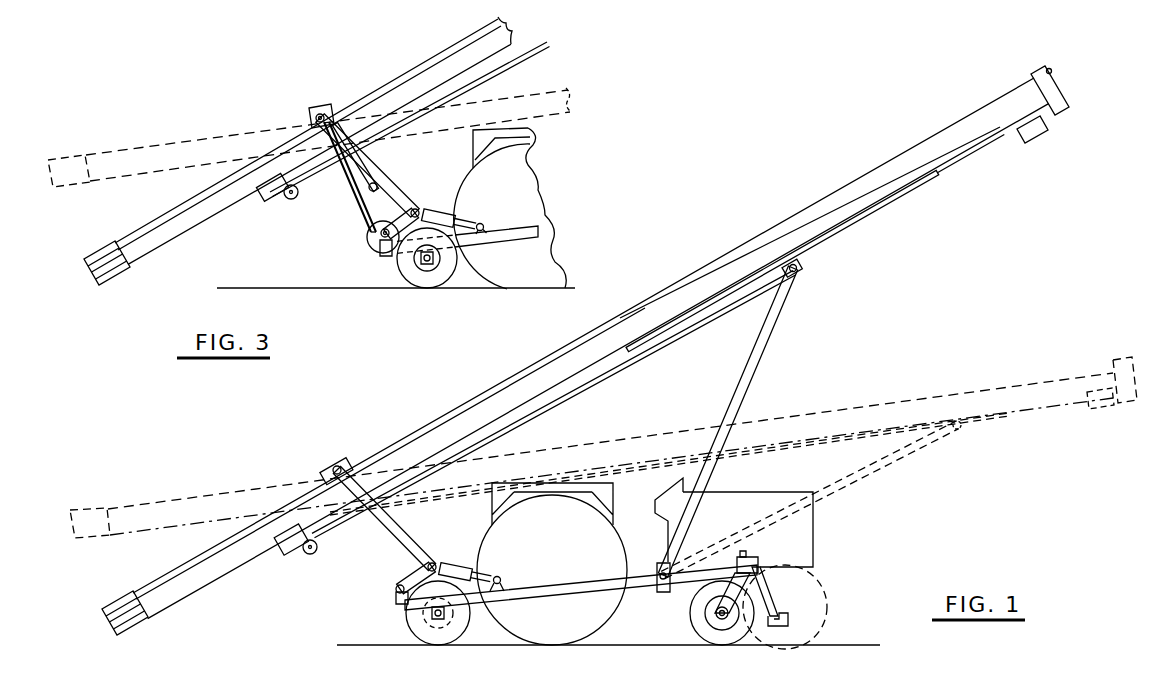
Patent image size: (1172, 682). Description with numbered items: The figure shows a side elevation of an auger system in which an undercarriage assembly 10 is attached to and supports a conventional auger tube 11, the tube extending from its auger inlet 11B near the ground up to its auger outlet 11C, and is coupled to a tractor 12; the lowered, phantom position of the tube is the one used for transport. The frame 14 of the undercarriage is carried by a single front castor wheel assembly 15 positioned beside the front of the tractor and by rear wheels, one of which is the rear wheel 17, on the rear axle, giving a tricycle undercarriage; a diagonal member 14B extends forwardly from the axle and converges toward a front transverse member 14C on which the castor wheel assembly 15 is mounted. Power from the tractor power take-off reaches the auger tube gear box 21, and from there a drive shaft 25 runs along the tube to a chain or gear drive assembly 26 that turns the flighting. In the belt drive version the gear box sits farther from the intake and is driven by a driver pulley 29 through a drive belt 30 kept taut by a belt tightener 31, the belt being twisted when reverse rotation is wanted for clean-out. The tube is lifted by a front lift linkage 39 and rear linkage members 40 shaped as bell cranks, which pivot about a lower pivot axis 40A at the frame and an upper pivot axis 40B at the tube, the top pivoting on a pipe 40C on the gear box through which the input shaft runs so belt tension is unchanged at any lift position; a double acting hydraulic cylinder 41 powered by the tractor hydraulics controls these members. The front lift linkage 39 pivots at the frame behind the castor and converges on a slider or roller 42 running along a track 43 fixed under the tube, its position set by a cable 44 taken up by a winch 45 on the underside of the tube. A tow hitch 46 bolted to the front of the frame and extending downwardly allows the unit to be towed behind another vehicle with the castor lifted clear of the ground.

In FIG. 3, the undercarriage assembly 10 is at (501, 250).
In FIG. 1, the undercarriage assembly 10 is at (592, 605).
In FIG. 3, the auger tube 11 is at (455, 42).
In FIG. 1, the auger tube 11 is at (866, 170).
In FIG. 3, the auger inlet 11B is at (115, 267).
In FIG. 1, the auger inlet 11B is at (140, 620).
In FIG. 1, the auger outlet 11C is at (1047, 133).
In FIG. 3, the tractor 12 is at (532, 165).
In FIG. 1, the tractor 12 is at (750, 492).
In FIG. 3, the frame 14 is at (510, 229).
In FIG. 1, the frame 14 is at (588, 582).
In FIG. 1, the diagonal member 14B is at (555, 586).
In FIG. 1, the front transverse member 14C is at (748, 556).
In FIG. 1, the front castor wheel assembly 15 is at (692, 630).
In FIG. 3, the rear wheel 17 is at (425, 287).
In FIG. 1, the rear wheel 17 is at (408, 620).
In FIG. 3, the auger tube gear box 21 is at (310, 125).
In FIG. 1, the auger tube gear box 21 is at (340, 462).
In FIG. 3, the drive shaft 25 is at (414, 66).
In FIG. 1, the drive shaft 25 is at (778, 222).
In FIG. 1, the chain or gear drive assembly 26 is at (1064, 95).
In FIG. 3, the driver pulley 29 is at (368, 224).
In FIG. 3, the drive belt 30 is at (346, 172).
In FIG. 3, the belt tightener 31 is at (380, 178).
In FIG. 1, the front lift linkage 39 is at (761, 353).
In FIG. 3, the rear linkage members 40 is at (400, 195).
In FIG. 1, the rear linkage members 40 is at (395, 525).
In FIG. 3, the lower pivot axis 40A is at (375, 240).
In FIG. 1, the lower pivot axis 40A is at (394, 588).
In FIG. 3, the upper pivot axis 40B is at (312, 112).
In FIG. 1, the upper pivot axis 40B is at (328, 476).
In FIG. 3, the pipe 40C is at (316, 108).
In FIG. 3, the double acting hydraulic cylinder 41 is at (458, 215).
In FIG. 1, the double acting hydraulic cylinder 41 is at (455, 568).
In FIG. 1, the slider or roller 42 is at (803, 265).
In FIG. 1, the track 43 is at (900, 196).
In FIG. 3, the cable 44 is at (514, 60).
In FIG. 1, the cable 44 is at (568, 392).
In FIG. 3, the winch 45 is at (280, 200).
In FIG. 1, the winch 45 is at (302, 555).
In FIG. 1, the tow hitch 46 is at (796, 612).